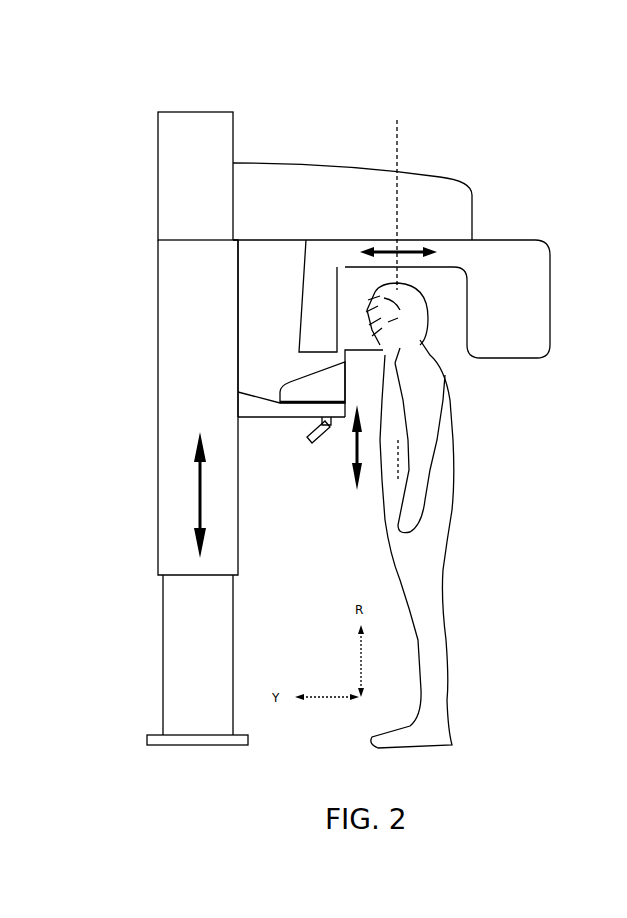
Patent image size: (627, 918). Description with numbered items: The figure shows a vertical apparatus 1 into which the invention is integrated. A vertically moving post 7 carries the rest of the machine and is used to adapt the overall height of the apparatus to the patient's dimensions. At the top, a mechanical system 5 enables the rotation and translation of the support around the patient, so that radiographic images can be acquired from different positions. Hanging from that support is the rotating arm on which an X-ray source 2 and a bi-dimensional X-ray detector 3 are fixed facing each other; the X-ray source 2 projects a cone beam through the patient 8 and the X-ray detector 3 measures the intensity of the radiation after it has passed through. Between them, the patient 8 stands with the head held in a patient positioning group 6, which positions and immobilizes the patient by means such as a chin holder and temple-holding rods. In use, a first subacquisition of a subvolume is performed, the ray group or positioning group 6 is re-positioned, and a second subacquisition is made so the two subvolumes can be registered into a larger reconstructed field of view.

The vertical apparatus 1 is at (143, 120).
The X-ray source 2 is at (520, 292).
The bi-dimensional X-ray detector 3 is at (318, 335).
The mechanical system 5 is at (430, 202).
The patient positioning group 6 is at (365, 330).
The vertically moving post 7 is at (190, 392).
The patient 8 is at (428, 383).